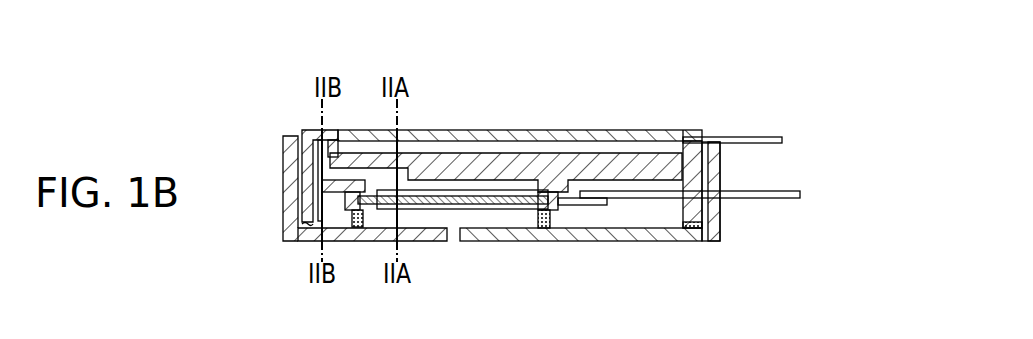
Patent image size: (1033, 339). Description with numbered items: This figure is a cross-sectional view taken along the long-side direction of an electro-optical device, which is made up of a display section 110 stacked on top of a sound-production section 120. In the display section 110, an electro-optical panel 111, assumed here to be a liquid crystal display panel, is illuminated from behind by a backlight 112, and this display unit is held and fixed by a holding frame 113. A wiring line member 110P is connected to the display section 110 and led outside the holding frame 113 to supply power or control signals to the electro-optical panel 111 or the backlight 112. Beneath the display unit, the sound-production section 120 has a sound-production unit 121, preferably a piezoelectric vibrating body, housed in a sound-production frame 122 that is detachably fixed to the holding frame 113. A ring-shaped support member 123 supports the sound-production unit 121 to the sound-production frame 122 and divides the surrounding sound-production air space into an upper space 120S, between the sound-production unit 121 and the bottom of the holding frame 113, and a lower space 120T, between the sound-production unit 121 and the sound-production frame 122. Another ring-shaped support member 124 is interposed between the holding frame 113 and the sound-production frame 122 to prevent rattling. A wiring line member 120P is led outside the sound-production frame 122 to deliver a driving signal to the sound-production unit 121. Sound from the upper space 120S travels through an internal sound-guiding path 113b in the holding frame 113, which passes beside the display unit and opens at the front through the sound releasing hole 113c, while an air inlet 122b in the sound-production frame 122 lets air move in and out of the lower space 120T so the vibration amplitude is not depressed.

The display section 110 is at (538, 114).
The wiring line member 110P is at (752, 137).
The electro-optical panel 111 is at (440, 130).
The backlight 112 is at (472, 152).
The holding frame 113 is at (312, 128).
The internal sound-guiding path 113b is at (343, 128).
The sound releasing hole 113c is at (309, 128).
The sound-production section 120 is at (599, 202).
The wiring line member 120P is at (782, 198).
The upper space 120S is at (508, 185).
The lower space 120T is at (373, 243).
The sound-production unit 121 is at (480, 210).
The sound-production frame 122 is at (344, 217).
The air inlet 122b is at (453, 243).
The support member 123 is at (548, 232).
The support member 124 is at (705, 242).